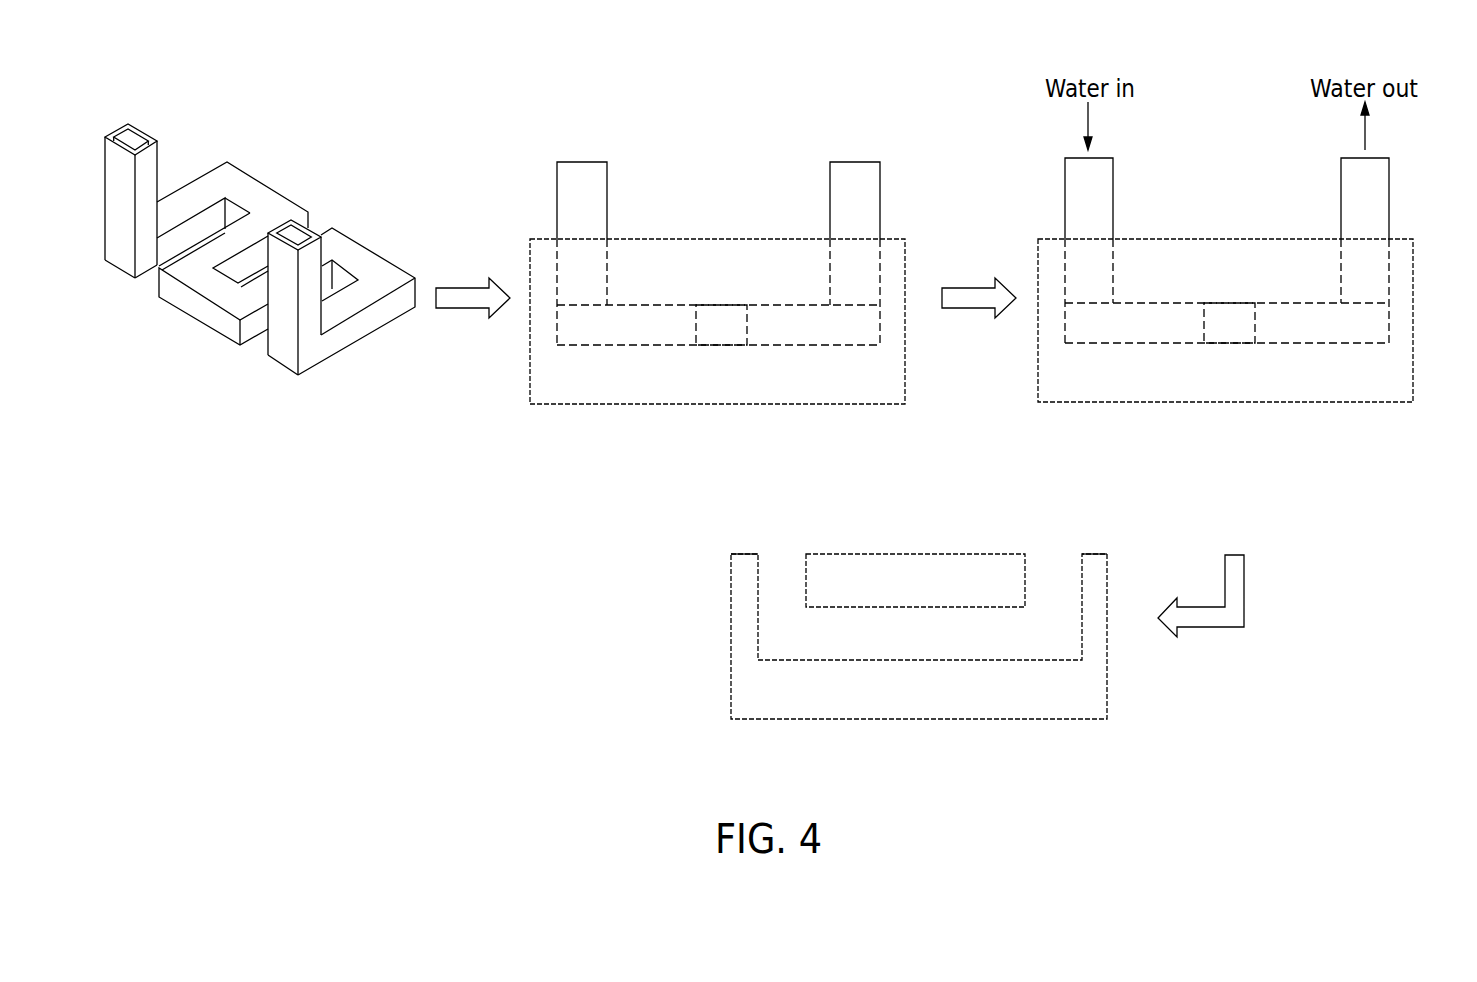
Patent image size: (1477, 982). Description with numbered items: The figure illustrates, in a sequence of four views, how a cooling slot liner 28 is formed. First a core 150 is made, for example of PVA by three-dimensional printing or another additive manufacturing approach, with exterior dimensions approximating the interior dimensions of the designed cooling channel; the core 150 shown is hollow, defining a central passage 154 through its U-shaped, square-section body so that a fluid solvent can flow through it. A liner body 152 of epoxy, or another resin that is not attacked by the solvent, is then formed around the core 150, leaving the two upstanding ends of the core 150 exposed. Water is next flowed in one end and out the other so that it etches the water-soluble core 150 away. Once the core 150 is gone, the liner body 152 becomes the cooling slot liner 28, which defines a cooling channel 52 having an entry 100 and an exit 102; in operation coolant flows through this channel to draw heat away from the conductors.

The core 150 is at (784, 220).
The central passage 154 is at (133, 137).
The liner body 152 is at (720, 406).
The cooling channel 52 is at (930, 646).
The entry 100 is at (750, 546).
The exit 102 is at (1049, 548).
The cooling slot liner 28 is at (731, 639).